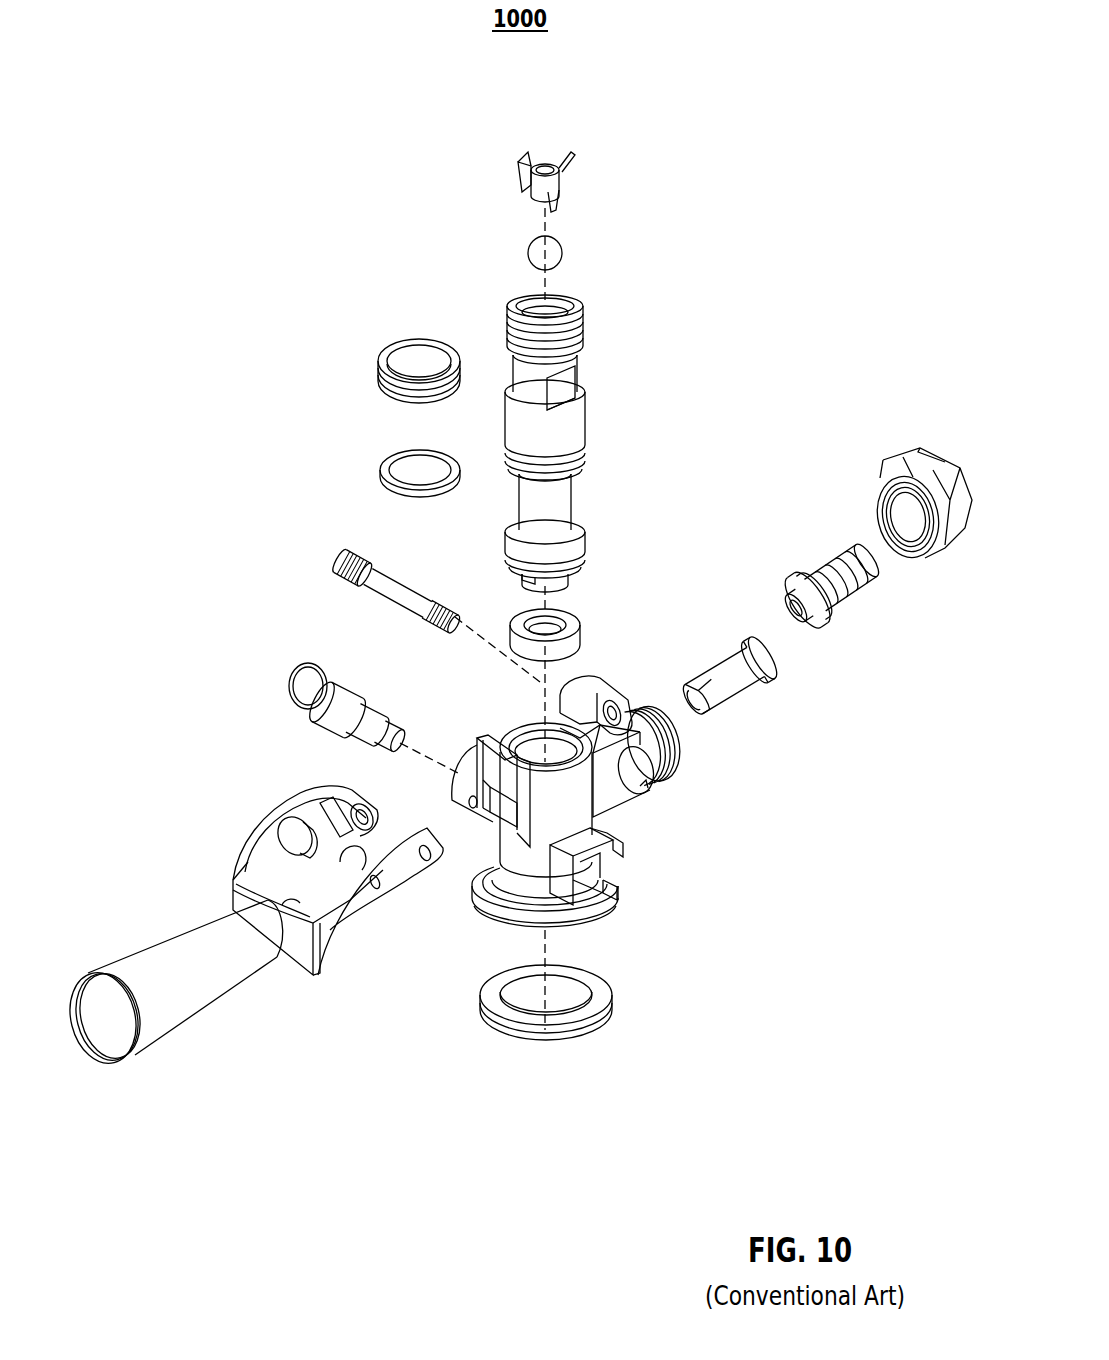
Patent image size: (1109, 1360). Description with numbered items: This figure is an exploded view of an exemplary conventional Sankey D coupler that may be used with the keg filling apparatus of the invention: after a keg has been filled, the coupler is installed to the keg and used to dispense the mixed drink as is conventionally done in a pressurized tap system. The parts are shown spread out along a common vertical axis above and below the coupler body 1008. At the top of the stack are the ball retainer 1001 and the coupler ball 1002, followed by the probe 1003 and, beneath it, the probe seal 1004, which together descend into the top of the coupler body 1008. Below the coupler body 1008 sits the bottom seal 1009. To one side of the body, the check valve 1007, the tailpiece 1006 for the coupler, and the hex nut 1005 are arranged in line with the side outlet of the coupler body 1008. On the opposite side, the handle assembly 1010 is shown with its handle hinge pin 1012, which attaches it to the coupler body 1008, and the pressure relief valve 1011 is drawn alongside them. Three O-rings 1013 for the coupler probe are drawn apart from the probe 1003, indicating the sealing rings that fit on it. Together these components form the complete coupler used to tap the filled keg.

The ball retainer 1001 is at (566, 173).
The coupler ball 1002 is at (563, 252).
The probe 1003 is at (590, 412).
The probe seal 1004 is at (580, 630).
The hex nut 1005 is at (958, 547).
The tailpiece for coupler 1006 is at (832, 628).
The check valve 1007 is at (747, 685).
The coupler body 1008 is at (620, 893).
The bottom seal 1009 is at (613, 1010).
The handle assembly 1010 is at (242, 852).
The pressure relief valve 1011 is at (288, 681).
The handle hinge pin 1012 is at (333, 570).
The O-ring for coupler probe 1013 is at (387, 360).